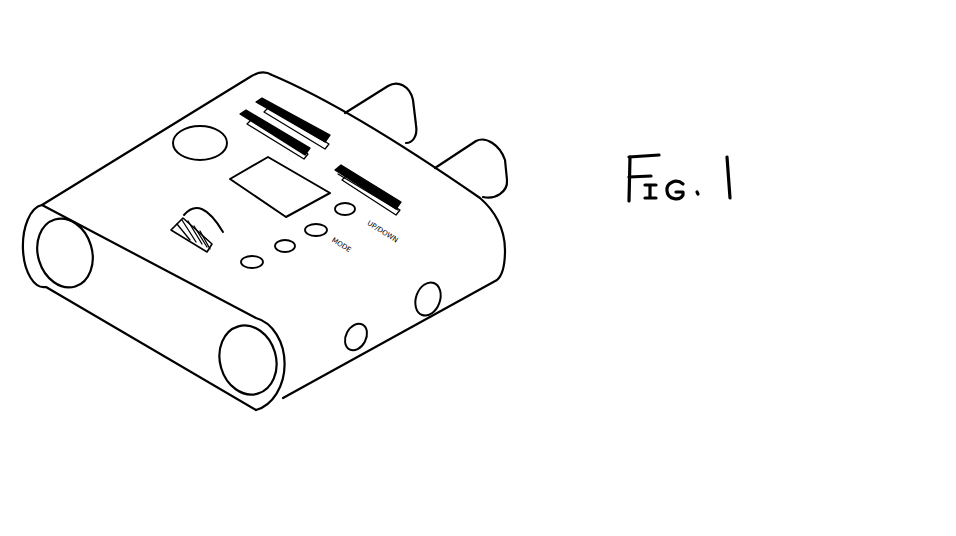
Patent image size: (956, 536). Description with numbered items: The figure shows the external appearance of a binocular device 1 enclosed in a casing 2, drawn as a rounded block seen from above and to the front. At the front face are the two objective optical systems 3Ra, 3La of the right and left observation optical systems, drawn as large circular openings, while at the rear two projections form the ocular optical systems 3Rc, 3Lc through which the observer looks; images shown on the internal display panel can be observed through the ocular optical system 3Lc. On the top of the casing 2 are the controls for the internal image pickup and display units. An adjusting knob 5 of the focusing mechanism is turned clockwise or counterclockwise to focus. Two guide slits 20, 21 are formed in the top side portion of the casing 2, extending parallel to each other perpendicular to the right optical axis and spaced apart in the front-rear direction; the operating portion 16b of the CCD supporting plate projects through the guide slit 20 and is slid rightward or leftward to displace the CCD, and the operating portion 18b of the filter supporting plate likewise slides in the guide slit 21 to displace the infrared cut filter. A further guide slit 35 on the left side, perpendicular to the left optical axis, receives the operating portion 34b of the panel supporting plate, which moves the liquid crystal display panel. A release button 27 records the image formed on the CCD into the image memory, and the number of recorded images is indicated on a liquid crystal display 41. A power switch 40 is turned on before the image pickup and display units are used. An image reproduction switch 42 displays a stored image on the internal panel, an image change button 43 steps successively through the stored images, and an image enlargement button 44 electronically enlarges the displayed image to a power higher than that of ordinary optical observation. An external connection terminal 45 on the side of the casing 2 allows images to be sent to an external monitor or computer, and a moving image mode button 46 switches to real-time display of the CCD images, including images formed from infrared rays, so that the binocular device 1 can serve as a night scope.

The binocular device 1 is at (171, 110).
The casing 2 is at (138, 141).
The objective optical system 3Ra is at (63, 254).
The objective optical system 3La is at (240, 355).
The ocular optical system 3Rc is at (413, 100).
The ocular optical system 3Lc is at (508, 152).
The adjusting knob 5 is at (183, 213).
The operating portion 16b is at (270, 106).
The operating portion 18b is at (247, 116).
The guide slit 20 is at (298, 126).
The guide slit 21 is at (308, 134).
The release button 27 is at (192, 143).
The operating portion 34b is at (392, 204).
The guide slit 35 is at (365, 180).
The power switch 40 is at (363, 337).
The liquid crystal display 41 is at (233, 185).
The image reproduction switch 42 is at (280, 248).
The image change button 43 is at (353, 208).
The image enlargement button 44 is at (245, 265).
The external connection terminal 45 is at (433, 298).
The moving image mode button 46 is at (308, 236).